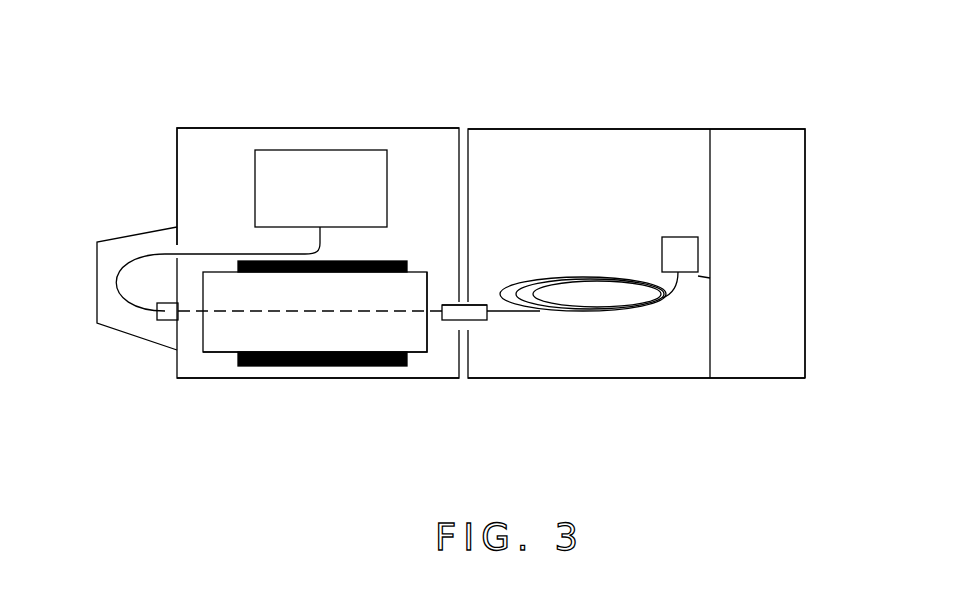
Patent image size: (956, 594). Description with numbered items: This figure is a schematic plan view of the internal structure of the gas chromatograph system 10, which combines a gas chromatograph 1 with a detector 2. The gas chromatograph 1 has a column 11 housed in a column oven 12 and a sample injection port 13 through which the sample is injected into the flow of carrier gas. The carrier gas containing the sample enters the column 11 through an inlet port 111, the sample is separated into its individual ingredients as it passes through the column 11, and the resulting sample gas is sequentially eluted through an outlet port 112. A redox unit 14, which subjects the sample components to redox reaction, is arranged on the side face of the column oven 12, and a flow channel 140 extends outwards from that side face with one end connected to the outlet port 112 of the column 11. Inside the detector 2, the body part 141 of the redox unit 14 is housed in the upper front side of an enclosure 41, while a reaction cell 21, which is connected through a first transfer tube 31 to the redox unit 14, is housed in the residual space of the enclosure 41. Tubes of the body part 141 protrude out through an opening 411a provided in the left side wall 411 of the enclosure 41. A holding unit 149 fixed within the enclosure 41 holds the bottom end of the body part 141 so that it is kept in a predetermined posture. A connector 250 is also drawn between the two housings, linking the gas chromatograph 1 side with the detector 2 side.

The gas chromatograph 1 is at (589, 114).
The gas chromatograph system 10 is at (706, 96).
The column 11 is at (555, 277).
The column oven 12 is at (632, 381).
The sample injection port 13 is at (662, 245).
The inlet port 111 is at (698, 276).
The outlet port 112 is at (438, 328).
The detector 2 is at (306, 116).
The reaction cell 21 is at (365, 150).
The first transfer tube 31 is at (120, 237).
The enclosure 41 is at (280, 381).
The left side wall 411 is at (177, 140).
The opening 411a is at (168, 323).
The redox unit 14 is at (215, 356).
The flow channel 140 is at (418, 310).
The body part 141 is at (427, 348).
The holding unit 149 is at (330, 368).
The connector 250 is at (487, 322).